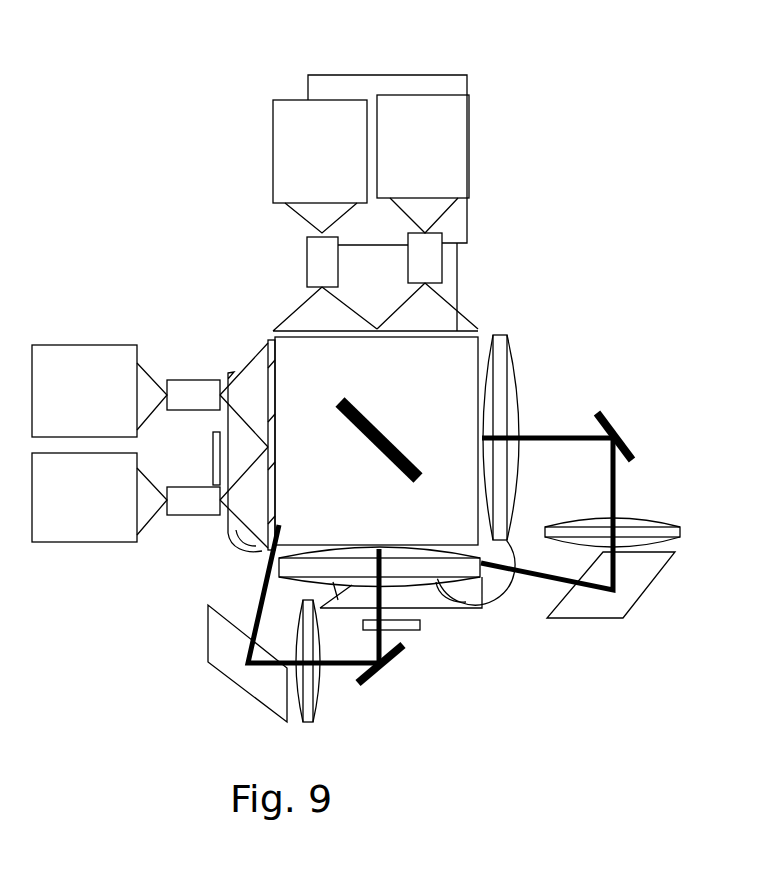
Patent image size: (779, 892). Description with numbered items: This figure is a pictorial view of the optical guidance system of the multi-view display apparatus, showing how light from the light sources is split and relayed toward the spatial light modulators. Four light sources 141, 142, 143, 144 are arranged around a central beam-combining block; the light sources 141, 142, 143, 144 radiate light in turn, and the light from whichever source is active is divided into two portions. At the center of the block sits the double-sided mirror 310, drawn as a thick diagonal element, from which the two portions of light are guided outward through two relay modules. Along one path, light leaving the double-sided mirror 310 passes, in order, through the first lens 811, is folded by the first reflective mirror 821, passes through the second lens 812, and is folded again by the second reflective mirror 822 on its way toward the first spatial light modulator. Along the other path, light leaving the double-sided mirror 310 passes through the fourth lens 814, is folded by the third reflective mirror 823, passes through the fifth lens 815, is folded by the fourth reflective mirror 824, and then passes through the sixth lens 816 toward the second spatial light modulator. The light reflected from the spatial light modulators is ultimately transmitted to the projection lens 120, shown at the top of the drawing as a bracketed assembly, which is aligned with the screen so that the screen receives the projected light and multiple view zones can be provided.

The projection lens 120 is at (467, 85).
The light source 143 is at (341, 163).
The light source 144 is at (449, 160).
The light source 142 is at (102, 403).
The light source 141 is at (102, 508).
The double-sided mirror 310 is at (388, 437).
The fourth lens 814 is at (508, 382).
The third reflective mirror 823 is at (628, 432).
The fifth lens 815 is at (682, 532).
The fourth reflective mirror 824 is at (643, 578).
The sixth lens 816 is at (485, 585).
The first lens 811 is at (427, 564).
The first reflective mirror 821 is at (372, 682).
The second reflective mirror 822 is at (243, 678).
The second lens 812 is at (315, 715).